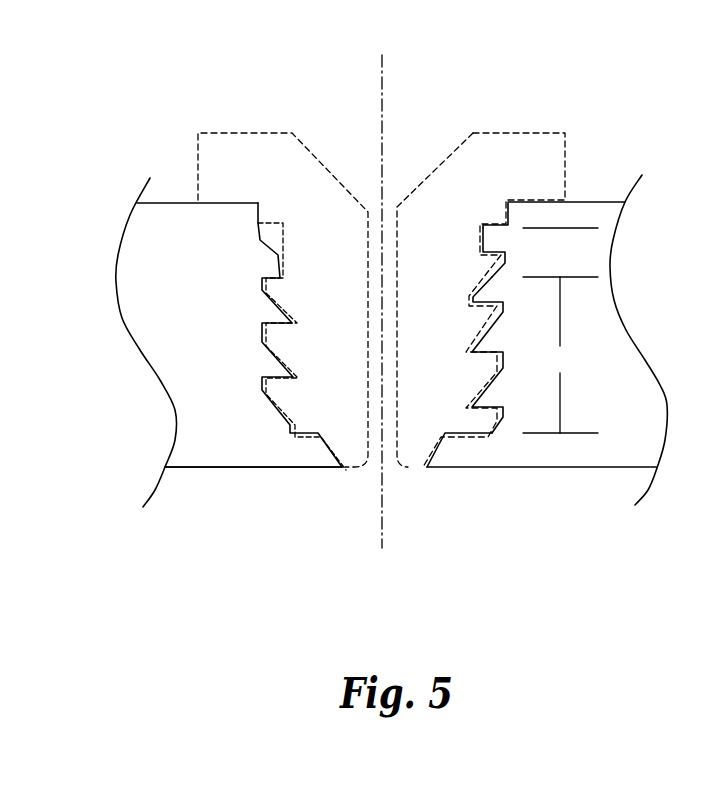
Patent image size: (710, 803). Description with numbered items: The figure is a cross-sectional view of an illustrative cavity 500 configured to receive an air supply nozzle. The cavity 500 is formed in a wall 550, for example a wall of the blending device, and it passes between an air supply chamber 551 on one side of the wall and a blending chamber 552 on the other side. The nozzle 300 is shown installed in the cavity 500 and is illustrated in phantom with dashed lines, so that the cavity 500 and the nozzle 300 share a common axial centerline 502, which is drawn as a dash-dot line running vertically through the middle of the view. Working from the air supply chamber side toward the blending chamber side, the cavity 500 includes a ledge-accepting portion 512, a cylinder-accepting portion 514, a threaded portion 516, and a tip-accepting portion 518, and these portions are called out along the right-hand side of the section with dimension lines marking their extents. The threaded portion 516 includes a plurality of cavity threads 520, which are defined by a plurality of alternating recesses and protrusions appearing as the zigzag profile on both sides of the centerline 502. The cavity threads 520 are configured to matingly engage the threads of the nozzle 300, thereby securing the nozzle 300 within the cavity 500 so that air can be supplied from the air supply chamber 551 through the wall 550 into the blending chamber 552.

The cavity 500 is at (185, 53).
The common axial centerline 502 is at (382, 108).
The wall 550 is at (185, 246).
The air supply chamber 551 is at (275, 70).
The blending chamber 552 is at (307, 553).
The cavity threads 520 is at (262, 360).
The nozzle 300 is at (535, 132).
The ledge-accepting portion 512 is at (540, 215).
The cylinder-accepting portion 514 is at (540, 252).
The threaded portion 516 is at (523, 355).
The tip-accepting portion 518 is at (512, 450).